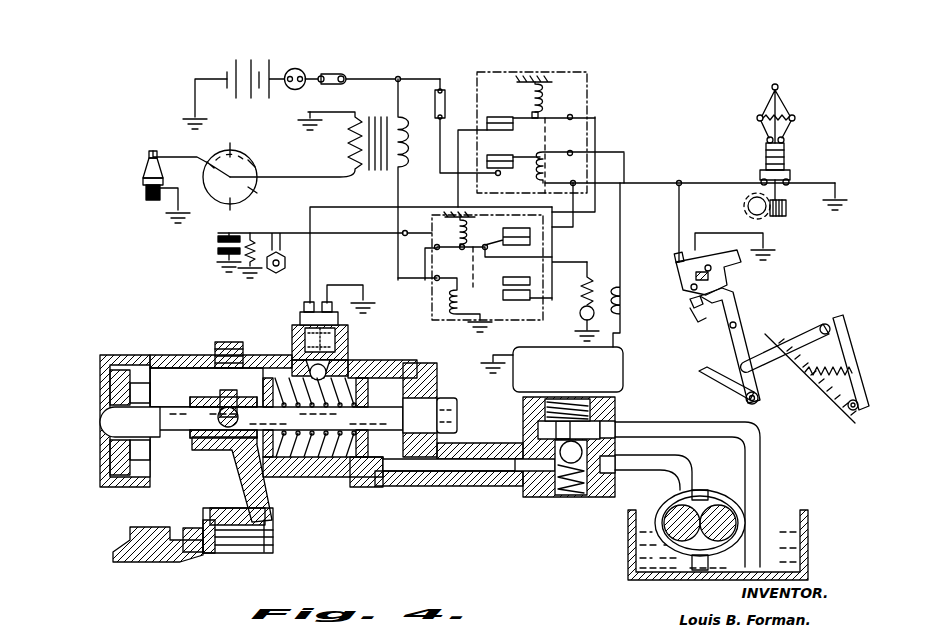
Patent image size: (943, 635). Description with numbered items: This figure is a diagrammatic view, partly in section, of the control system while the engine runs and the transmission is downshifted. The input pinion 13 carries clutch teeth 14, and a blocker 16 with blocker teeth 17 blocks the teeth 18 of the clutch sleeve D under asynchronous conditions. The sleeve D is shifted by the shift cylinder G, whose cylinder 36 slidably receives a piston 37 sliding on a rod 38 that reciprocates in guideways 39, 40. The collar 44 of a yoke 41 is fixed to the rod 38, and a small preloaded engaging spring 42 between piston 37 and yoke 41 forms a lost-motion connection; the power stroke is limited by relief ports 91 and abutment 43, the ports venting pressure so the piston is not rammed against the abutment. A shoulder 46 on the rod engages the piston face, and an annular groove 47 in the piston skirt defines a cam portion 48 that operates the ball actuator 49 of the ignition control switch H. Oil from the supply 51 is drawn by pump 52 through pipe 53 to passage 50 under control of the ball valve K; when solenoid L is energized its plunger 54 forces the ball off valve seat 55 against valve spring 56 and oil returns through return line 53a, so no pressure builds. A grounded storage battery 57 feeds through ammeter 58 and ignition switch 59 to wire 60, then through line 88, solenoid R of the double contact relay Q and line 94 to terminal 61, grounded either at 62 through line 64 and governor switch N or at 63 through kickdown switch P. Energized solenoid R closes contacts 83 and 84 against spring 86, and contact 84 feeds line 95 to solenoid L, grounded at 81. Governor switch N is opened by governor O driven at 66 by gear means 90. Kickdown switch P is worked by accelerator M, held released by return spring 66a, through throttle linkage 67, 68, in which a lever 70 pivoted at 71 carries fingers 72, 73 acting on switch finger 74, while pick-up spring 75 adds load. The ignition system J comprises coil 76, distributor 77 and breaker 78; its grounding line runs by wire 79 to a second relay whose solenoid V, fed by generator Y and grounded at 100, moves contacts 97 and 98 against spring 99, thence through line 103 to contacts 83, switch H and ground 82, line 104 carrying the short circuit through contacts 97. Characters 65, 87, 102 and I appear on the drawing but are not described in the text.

The input pinion 13 is at (150, 529).
The clutch teeth 14 is at (178, 530).
The blocker 16 is at (240, 545).
The blocker teeth 17 is at (198, 527).
The clutch sleeve teeth 18 is at (274, 538).
The cylinder 36 is at (322, 458).
The piston 37 is at (405, 368).
The rod 38 is at (182, 430).
The guideway 39 is at (162, 396).
The guideway 40 is at (432, 386).
The yoke 41 is at (232, 462).
The engaging spring 42 is at (348, 416).
The abutment 43 is at (300, 458).
The yoke collar 44 is at (212, 402).
The shoulder 46 is at (456, 416).
The annular groove 47 is at (380, 364).
The cam portion 48 is at (348, 353).
The ball actuator 49 is at (349, 338).
The passage 50 is at (428, 472).
The oil supply 51 is at (810, 523).
The pump 52 is at (662, 522).
The pipe 53 is at (640, 475).
The return line 53a is at (714, 422).
The solenoid plunger 54 is at (614, 401).
The valve seat 55 is at (614, 447).
The valve spring 56 is at (560, 488).
The storage battery 57 is at (240, 70).
The ammeter 58 is at (302, 69).
The ignition switch 59 is at (346, 74).
The wire 60 is at (414, 79).
The terminal 61 is at (680, 181).
The ground 62 is at (836, 212).
The ground 63 is at (775, 258).
The line 64 is at (740, 182).
The conductor 65 is at (678, 203).
The governor drive 66 is at (745, 205).
The return spring 66a is at (838, 402).
The throttle linkage 67 is at (788, 376).
The throttle linkage 68 is at (716, 384).
The lever 70 is at (741, 338).
The pivot 71 is at (740, 318).
The finger 72 is at (727, 287).
The finger 73 is at (690, 322).
The switch finger 74 is at (690, 307).
The pick-up spring 75 is at (812, 386).
The ignition coil 76 is at (378, 117).
The distributor 77 is at (258, 184).
The breaker 78 is at (262, 234).
The wire 79 is at (397, 191).
The ground 81 is at (500, 350).
The ground 82 is at (363, 285).
The relay contacts 83 is at (509, 117).
The relay contact 84 is at (495, 160).
The relay spring 86 is at (545, 98).
The conductor 87 is at (397, 258).
The line 88 is at (439, 144).
The gear means 90 is at (780, 216).
The relief ports 91 is at (362, 480).
The line 94 is at (655, 182).
The line 95 is at (621, 262).
The relay contacts 97 is at (506, 232).
The relay contacts 98 is at (515, 299).
The relay spring 99 is at (418, 228).
The ground 100 is at (488, 326).
The ground 102 is at (583, 333).
The line 103 is at (457, 198).
The line 104 is at (565, 224).
The clutch sleeve D is at (240, 514).
The shift cylinder G is at (291, 360).
The ignition control switch H is at (339, 316).
The relay I is at (431, 309).
The ignition system J is at (281, 233).
The ball valve K is at (523, 444).
The solenoid L is at (614, 370).
The accelerator M is at (838, 318).
The governor switch N is at (793, 175).
The governor O is at (784, 105).
The kickdown switch P is at (678, 282).
The double contact relay Q is at (583, 103).
The relay solenoid R is at (548, 168).
The relay solenoid V is at (467, 300).
The generator Y is at (579, 314).